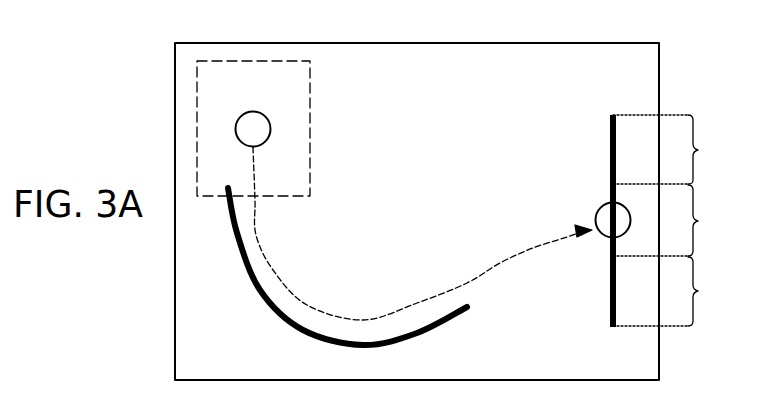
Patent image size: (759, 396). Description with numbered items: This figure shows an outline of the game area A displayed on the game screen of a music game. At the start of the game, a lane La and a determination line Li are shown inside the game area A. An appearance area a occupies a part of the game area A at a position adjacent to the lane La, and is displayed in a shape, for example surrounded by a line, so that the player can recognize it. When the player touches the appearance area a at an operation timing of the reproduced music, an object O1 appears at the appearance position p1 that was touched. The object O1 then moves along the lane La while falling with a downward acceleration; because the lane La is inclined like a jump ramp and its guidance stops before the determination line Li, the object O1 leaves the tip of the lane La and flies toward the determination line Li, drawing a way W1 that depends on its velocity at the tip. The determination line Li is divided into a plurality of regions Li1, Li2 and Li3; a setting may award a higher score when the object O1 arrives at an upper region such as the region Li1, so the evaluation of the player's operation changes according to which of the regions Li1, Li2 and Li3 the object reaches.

The game area A is at (517, 63).
The appearance area a is at (310, 173).
The object O1 is at (270, 116).
The appearance position p1 is at (271, 161).
The lane La is at (258, 293).
The way W1 is at (480, 273).
The determination line Li is at (610, 300).
The region of determination line Li1 is at (674, 149).
The region of determination line Li2 is at (674, 220).
The region of determination line Li3 is at (674, 291).